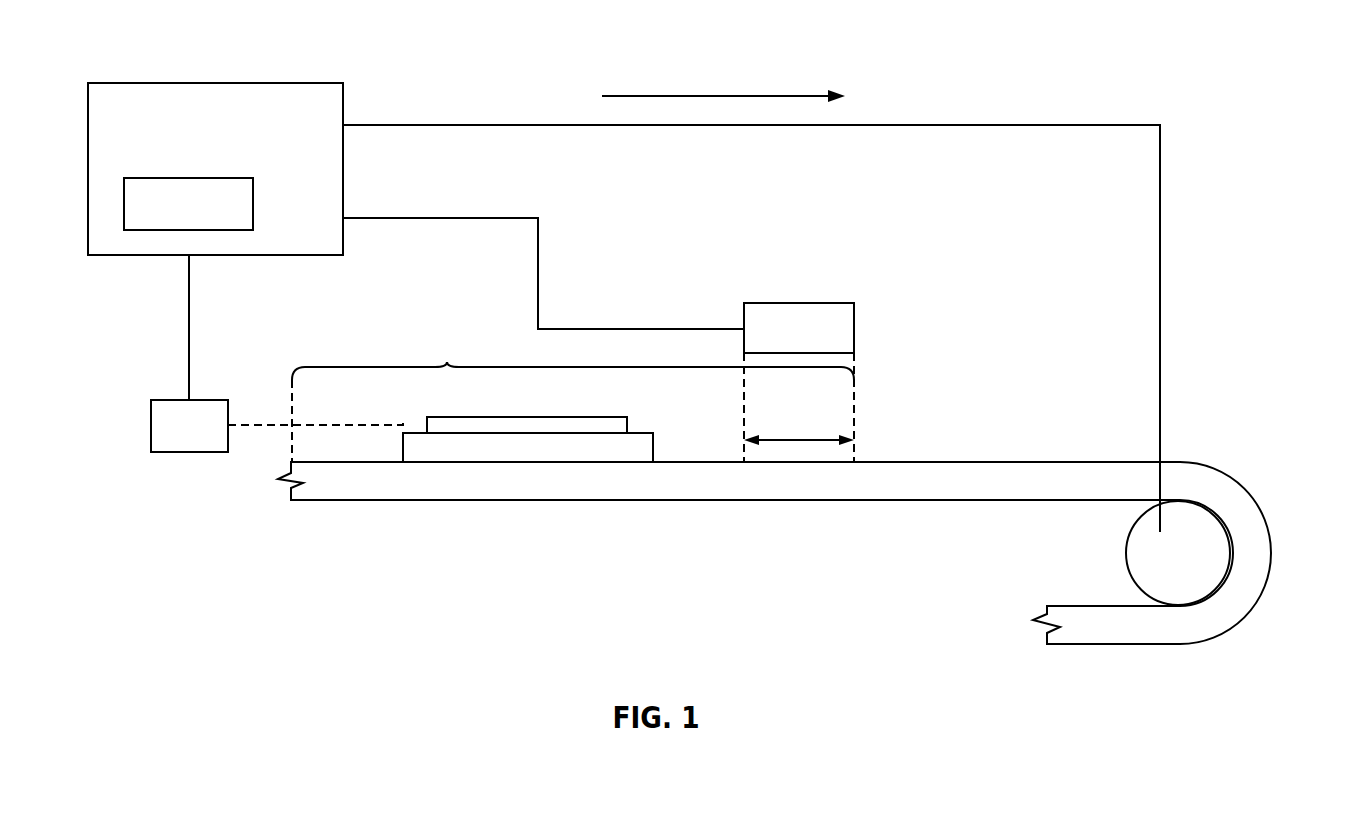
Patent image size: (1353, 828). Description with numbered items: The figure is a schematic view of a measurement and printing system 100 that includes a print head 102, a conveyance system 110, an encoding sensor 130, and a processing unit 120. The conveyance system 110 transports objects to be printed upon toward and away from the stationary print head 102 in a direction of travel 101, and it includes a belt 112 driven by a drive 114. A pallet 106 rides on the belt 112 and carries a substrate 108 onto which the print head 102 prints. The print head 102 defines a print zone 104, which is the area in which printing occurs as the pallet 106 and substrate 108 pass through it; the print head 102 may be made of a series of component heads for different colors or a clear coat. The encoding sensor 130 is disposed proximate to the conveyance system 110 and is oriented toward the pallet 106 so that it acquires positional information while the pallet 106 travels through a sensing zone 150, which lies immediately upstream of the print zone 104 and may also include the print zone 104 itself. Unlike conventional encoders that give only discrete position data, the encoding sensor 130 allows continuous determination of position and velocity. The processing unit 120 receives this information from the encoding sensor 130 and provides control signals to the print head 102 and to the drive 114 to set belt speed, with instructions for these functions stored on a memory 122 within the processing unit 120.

The system 100 is at (1163, 90).
The direction of travel 101 is at (708, 96).
The print head 102 is at (854, 323).
The print zone 104 is at (782, 437).
The pallet 106 is at (653, 447).
The substrate 108 is at (550, 417).
The conveyance system 110 is at (1176, 528).
The belt 112 is at (968, 462).
The drive 114 is at (1145, 553).
The processing unit 120 is at (312, 83).
The memory 122 is at (232, 178).
The encoding sensor 130 is at (170, 452).
The sensing zone 150 is at (447, 362).